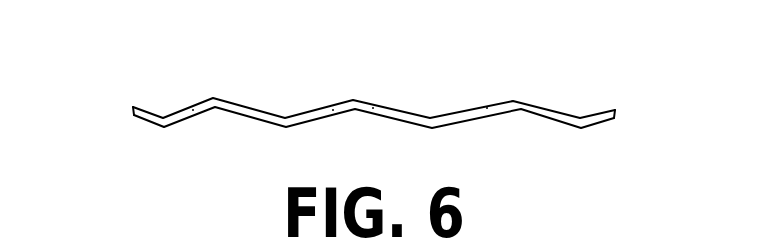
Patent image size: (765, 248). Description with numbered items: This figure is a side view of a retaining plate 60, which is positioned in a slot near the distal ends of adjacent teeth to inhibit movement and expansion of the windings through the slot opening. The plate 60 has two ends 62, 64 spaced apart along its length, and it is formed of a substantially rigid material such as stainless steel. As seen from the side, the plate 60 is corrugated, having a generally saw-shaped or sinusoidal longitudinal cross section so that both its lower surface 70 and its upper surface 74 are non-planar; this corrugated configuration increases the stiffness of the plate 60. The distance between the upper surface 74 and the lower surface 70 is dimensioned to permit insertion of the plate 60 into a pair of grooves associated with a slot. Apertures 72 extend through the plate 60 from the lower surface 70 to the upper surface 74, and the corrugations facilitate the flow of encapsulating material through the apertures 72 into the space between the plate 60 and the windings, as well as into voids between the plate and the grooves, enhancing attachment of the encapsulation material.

The retaining plate 60 is at (372, 98).
The end 62 is at (129, 109).
The end 64 is at (617, 113).
The lower surface 70 is at (263, 124).
The apertures 72 is at (236, 110).
The upper surface 74 is at (252, 110).